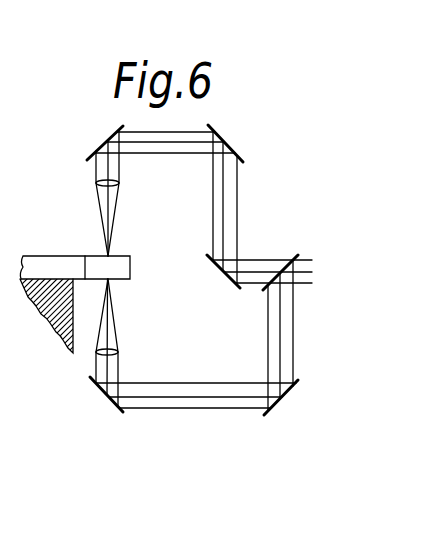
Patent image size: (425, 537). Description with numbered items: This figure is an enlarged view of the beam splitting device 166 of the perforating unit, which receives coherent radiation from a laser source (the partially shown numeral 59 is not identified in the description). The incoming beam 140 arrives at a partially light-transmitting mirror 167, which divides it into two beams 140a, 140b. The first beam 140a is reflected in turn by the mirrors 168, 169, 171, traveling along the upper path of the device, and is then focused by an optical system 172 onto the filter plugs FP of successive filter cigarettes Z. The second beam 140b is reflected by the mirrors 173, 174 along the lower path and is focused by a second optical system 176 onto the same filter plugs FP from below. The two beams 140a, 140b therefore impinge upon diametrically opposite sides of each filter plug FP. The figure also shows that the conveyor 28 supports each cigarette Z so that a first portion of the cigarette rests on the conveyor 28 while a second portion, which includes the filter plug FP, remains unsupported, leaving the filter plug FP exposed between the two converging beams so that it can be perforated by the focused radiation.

The laser (partially shown) 59 is at (9, 93).
The beam splitting device 166 is at (65, 193).
The mirror 171 is at (110, 133).
The optical system 172 is at (119, 184).
The mirror 169 is at (222, 133).
The beam 140a is at (238, 180).
The mirror 168 is at (215, 268).
The incoming beam 140 is at (307, 256).
The partially light-transmitting mirror 167 is at (295, 256).
The beam 140b is at (293, 327).
The mirror 173 is at (276, 406).
The mirror 174 is at (117, 412).
The optical system 176 is at (118, 352).
The conveyor 28 is at (50, 325).
The filter cigarette Z is at (50, 262).
The filter plug FP is at (112, 256).